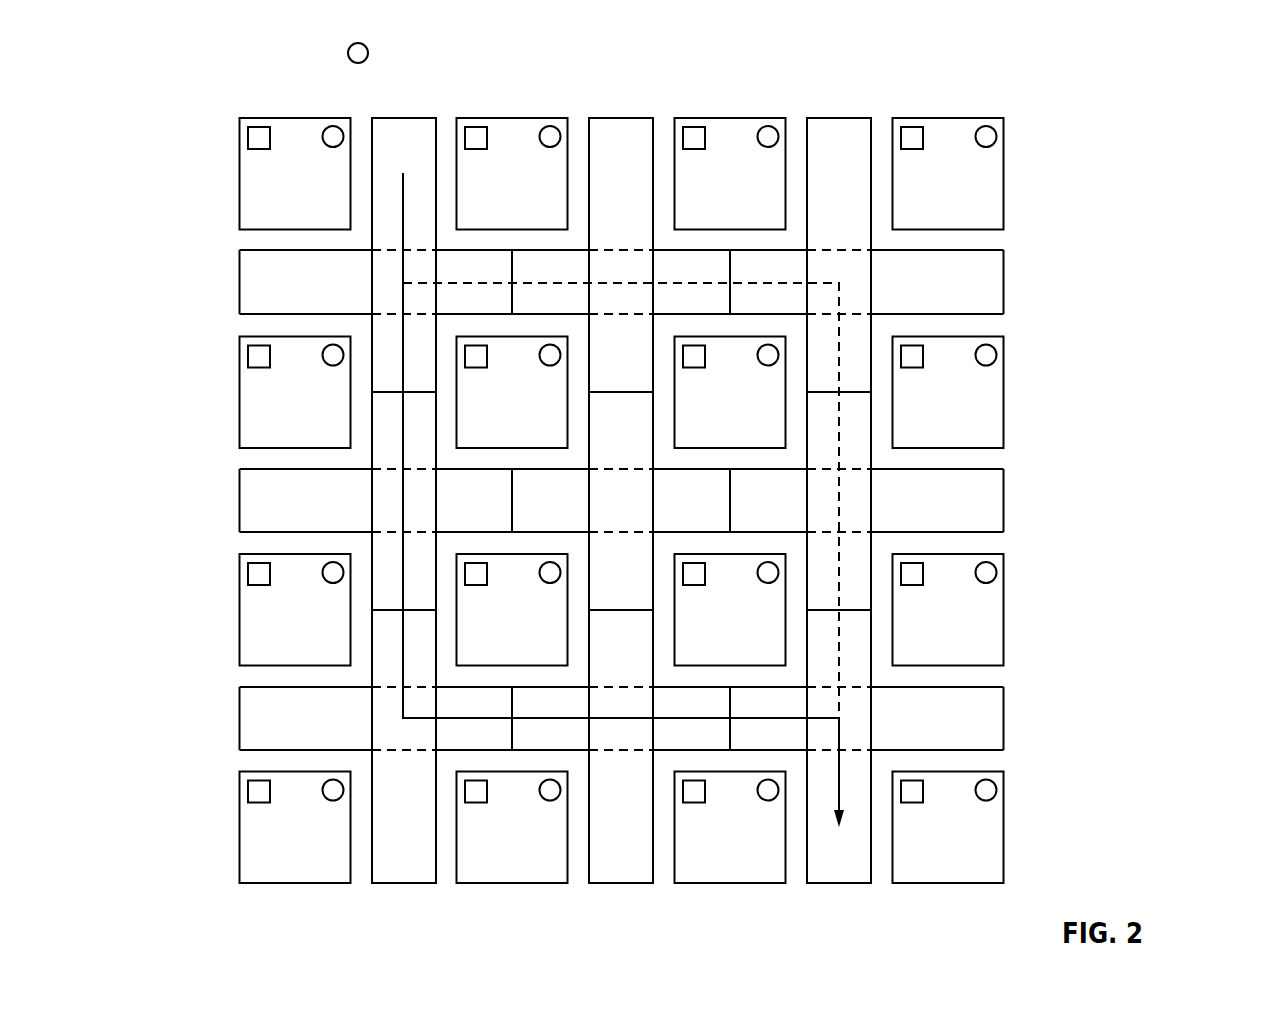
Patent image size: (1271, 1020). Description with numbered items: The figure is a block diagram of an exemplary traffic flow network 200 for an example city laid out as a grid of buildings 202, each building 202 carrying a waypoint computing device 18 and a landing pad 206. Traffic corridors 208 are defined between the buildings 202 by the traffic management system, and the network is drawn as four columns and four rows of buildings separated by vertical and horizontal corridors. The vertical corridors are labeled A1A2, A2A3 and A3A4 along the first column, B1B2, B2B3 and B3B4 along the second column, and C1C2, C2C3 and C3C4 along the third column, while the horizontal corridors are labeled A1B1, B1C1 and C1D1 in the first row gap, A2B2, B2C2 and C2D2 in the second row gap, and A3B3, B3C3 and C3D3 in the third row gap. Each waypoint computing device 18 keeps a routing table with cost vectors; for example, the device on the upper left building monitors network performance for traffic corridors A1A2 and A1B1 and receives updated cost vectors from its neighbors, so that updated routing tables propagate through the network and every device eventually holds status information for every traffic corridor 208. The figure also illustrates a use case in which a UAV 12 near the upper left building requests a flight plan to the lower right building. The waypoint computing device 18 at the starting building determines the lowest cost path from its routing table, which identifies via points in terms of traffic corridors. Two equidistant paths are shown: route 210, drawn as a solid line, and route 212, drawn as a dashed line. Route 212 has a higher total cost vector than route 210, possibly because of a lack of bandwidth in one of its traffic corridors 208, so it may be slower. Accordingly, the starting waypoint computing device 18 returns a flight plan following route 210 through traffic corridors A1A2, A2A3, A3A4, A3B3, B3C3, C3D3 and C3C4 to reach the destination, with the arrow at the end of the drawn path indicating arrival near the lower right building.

The UAV 12 is at (348, 58).
The waypoint computing device 18 is at (257, 138).
The traffic flow network 200 is at (1042, 88).
The building 202 is at (274, 150).
The landing pad 206 is at (349, 109).
The traffic corridor 208 is at (432, 100).
The route 210 is at (403, 240).
The route 212 is at (839, 506).
The traffic corridor A1A2 is at (402, 128).
The traffic corridor A2A3 is at (422, 448).
The traffic corridor A3A4 is at (404, 873).
The traffic corridor B1B2 is at (619, 128).
The traffic corridor B2B3 is at (625, 440).
The traffic corridor B3B4 is at (622, 873).
The traffic corridor C1C2 is at (837, 128).
The traffic corridor C2C3 is at (854, 431).
The traffic corridor C3C4 is at (838, 872).
The traffic corridor A1B1 is at (248, 283).
The traffic corridor B1C1 is at (553, 268).
The traffic corridor C1D1 is at (989, 282).
The traffic corridor A2B2 is at (248, 500).
The traffic corridor B2C2 is at (545, 505).
The traffic corridor C2D2 is at (989, 500).
The traffic corridor A3B3 is at (248, 718).
The traffic corridor B3C3 is at (556, 737).
The traffic corridor C3D3 is at (989, 718).